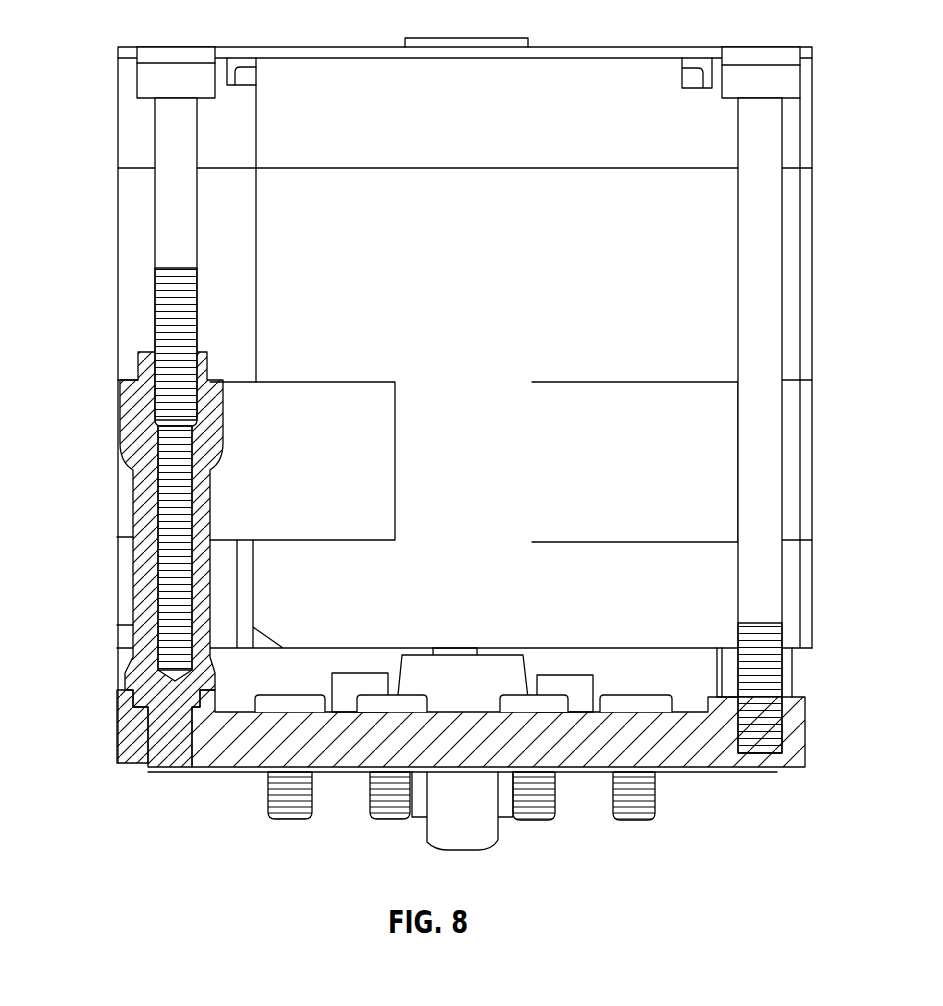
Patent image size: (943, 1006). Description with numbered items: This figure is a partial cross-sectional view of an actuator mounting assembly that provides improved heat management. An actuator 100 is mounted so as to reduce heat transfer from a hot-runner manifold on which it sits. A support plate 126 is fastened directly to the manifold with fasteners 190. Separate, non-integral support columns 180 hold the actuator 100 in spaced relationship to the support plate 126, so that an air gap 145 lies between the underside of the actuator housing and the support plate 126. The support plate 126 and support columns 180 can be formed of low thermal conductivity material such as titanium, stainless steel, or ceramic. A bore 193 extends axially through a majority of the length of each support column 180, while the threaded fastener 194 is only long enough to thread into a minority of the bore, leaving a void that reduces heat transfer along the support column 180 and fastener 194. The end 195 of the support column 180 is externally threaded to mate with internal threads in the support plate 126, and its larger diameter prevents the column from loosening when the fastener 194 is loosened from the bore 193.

The actuator 100 is at (690, 35).
The support plate 126 is at (660, 745).
The air gap 145 is at (247, 693).
The support column 180 is at (143, 575).
The fasteners 190 is at (637, 803).
The bore 193 is at (178, 568).
The threaded fastener 194 is at (162, 232).
The end of support column 195 is at (165, 742).